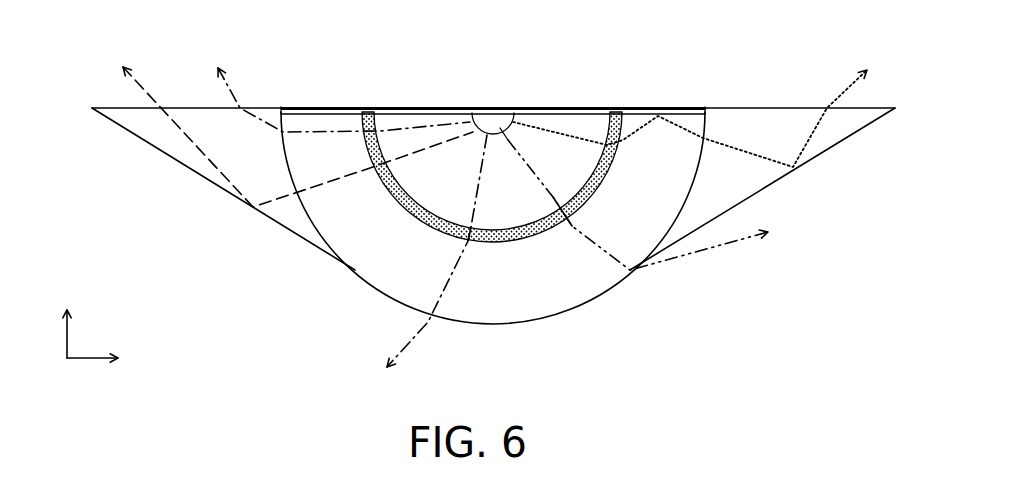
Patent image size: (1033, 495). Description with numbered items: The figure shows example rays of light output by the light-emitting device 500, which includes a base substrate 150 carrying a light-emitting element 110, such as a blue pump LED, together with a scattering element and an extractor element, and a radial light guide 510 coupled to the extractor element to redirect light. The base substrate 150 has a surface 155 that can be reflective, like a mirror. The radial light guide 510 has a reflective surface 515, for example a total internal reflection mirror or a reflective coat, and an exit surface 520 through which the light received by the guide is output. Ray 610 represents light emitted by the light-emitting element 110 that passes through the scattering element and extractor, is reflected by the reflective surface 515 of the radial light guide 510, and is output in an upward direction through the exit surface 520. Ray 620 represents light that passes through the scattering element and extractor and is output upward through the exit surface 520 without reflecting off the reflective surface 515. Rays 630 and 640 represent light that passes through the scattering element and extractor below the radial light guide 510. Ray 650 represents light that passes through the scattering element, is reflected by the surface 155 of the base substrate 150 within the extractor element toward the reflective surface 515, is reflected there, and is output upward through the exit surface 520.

The light-emitting device 500 is at (85, 20).
The light-emitting element 110 is at (503, 116).
The base substrate 150 is at (337, 108).
The surface 155 is at (313, 108).
The radial light guide 510 is at (750, 176).
The reflective surface 515 is at (820, 153).
The exit surface 520 is at (780, 108).
The ray 610 is at (172, 128).
The ray 620 is at (237, 97).
The ray 630 is at (412, 334).
The ray 640 is at (677, 257).
The ray 650 is at (843, 90).